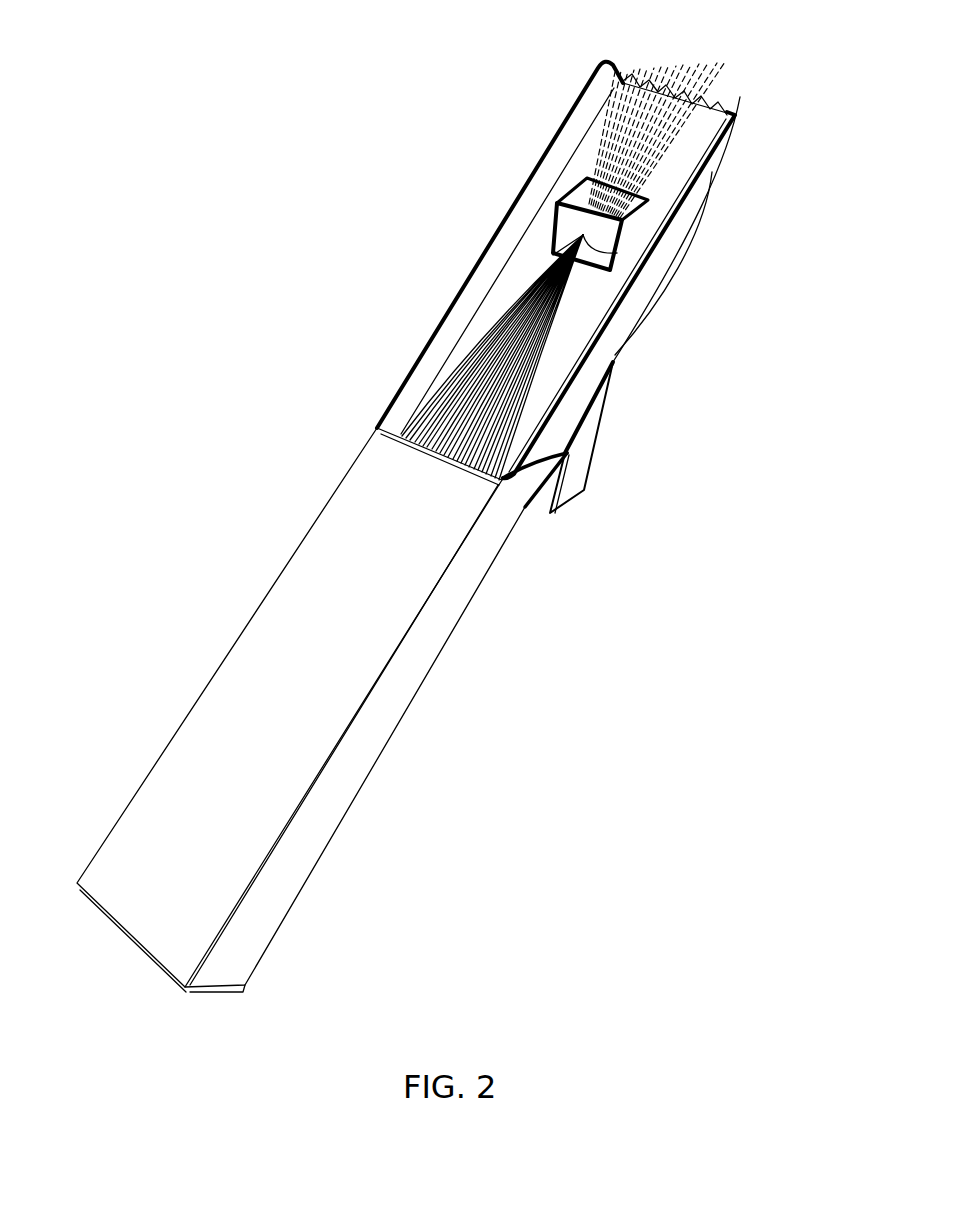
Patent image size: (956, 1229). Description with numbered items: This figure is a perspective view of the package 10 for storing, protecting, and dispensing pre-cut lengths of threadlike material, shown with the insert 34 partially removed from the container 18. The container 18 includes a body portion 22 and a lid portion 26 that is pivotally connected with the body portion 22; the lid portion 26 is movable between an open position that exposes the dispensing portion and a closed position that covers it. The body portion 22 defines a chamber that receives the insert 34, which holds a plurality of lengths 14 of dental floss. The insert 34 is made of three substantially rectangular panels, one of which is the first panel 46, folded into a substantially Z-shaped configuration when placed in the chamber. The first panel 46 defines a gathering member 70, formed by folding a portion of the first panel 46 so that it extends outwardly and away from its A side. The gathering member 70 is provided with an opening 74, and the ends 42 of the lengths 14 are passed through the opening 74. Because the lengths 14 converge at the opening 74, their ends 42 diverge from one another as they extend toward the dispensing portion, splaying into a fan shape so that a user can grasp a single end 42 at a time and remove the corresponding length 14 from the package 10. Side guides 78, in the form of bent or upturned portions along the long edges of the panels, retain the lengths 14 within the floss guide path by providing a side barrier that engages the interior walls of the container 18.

The package 10 is at (275, 264).
The lengths 14 is at (505, 395).
The container 18 is at (245, 664).
The body portion 22 is at (392, 700).
The lid portion 26 is at (580, 457).
The insert 34 is at (513, 277).
The ends 42 is at (687, 162).
The first panel 46 is at (593, 313).
The gathering member 70 is at (563, 220).
The opening 74 is at (618, 253).
The side guides 78 is at (557, 168).